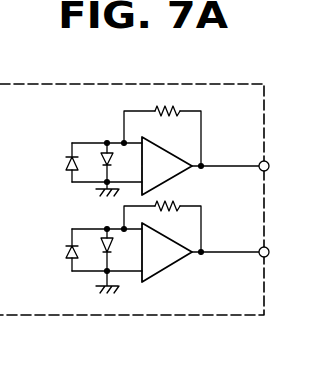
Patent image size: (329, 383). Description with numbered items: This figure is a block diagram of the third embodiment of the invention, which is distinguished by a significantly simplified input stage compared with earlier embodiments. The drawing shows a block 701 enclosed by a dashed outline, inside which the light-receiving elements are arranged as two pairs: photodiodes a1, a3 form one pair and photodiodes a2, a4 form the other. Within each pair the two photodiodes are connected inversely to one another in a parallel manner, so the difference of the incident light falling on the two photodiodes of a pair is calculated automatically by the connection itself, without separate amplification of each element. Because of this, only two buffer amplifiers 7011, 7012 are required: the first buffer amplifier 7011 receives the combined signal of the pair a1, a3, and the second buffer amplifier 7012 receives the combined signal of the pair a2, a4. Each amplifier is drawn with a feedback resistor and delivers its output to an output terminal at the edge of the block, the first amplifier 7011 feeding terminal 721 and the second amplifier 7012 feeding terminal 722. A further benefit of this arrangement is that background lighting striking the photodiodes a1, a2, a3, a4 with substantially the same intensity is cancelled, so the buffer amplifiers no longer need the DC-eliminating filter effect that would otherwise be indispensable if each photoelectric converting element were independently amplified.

The block 701 is at (146, 311).
The buffer amplifier 7011 is at (168, 173).
The buffer amplifier 7012 is at (168, 260).
The output terminal 721 is at (268, 163).
The output terminal 722 is at (268, 257).
The light-receiving element a1 is at (66, 161).
The light-receiving element a2 is at (66, 250).
The light-receiving element a3 is at (104, 152).
The light-receiving element a4 is at (102, 240).